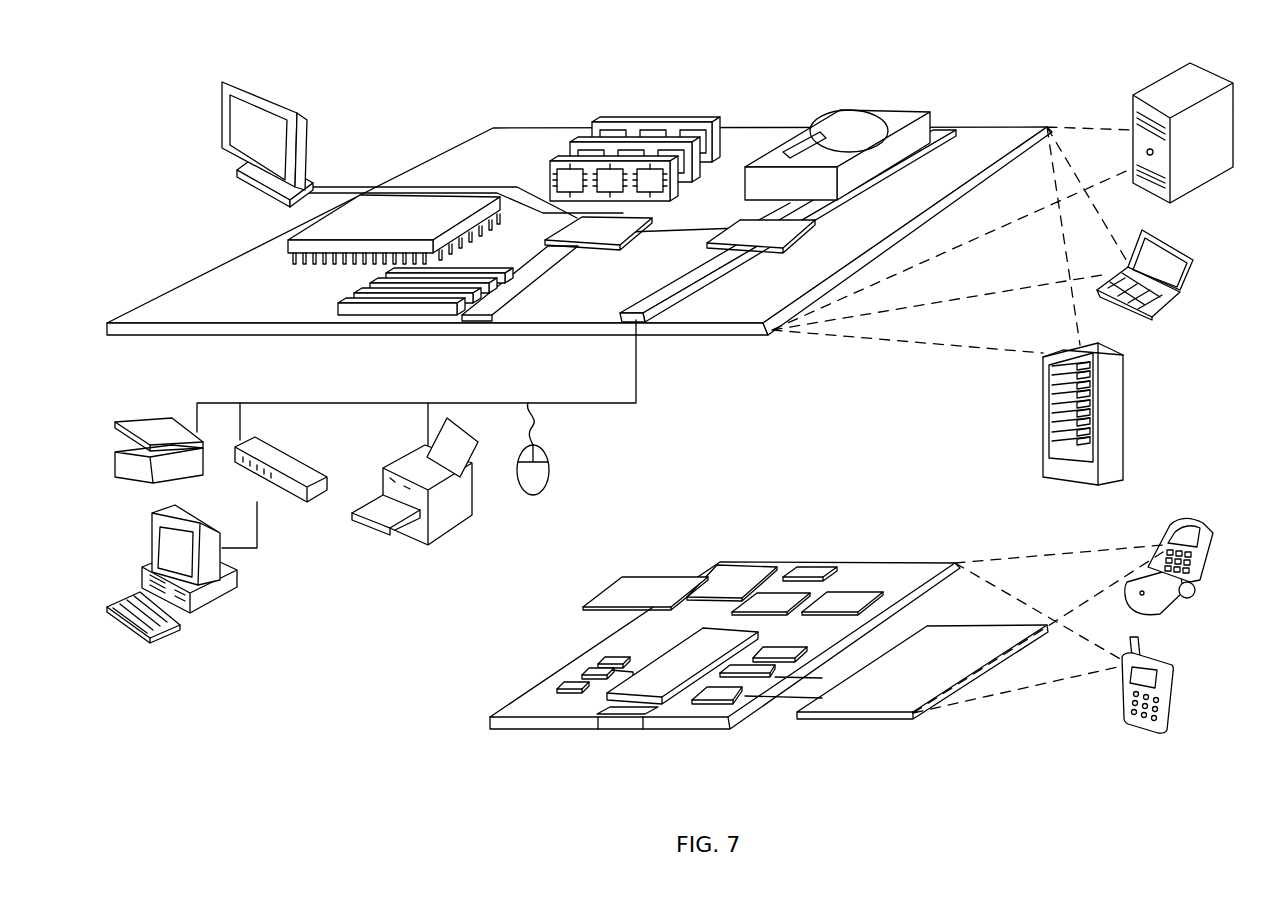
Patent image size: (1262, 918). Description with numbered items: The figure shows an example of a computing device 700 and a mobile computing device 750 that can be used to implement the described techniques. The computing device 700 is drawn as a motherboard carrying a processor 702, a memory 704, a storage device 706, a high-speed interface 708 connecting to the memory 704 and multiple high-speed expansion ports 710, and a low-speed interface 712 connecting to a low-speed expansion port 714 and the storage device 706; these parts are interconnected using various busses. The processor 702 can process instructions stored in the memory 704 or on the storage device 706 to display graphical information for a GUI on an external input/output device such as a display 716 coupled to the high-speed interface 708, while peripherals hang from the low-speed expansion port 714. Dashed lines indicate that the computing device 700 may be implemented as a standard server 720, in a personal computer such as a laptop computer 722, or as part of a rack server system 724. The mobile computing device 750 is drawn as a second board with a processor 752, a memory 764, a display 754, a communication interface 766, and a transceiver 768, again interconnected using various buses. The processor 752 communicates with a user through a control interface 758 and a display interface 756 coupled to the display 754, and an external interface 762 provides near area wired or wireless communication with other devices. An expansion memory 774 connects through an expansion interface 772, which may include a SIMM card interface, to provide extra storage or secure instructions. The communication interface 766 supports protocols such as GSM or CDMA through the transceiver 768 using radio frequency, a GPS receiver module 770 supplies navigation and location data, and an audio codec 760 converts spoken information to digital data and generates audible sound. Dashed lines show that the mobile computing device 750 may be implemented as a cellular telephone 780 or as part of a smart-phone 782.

The computing device 700 is at (413, 106).
The processor 702 is at (288, 242).
The memory 704 is at (606, 122).
The storage device 706 is at (822, 108).
The high-speed interface 708 is at (580, 226).
The high-speed expansion ports 710 is at (352, 298).
The low-speed interface 712 is at (740, 222).
The low-speed expansion port 714 is at (642, 326).
The display 716 is at (222, 84).
The standard server 720 is at (1133, 112).
The laptop computer 722 is at (1190, 248).
The rack server system 724 is at (1043, 438).
The mobile computing device 750 is at (466, 726).
The processor 752 is at (657, 688).
The display 754 is at (883, 700).
The display interface 756 is at (727, 698).
The control interface 758 is at (753, 670).
The audio codec 760 is at (780, 653).
The external interface 762 is at (622, 720).
The memory 764 is at (573, 685).
The communication interface 766 is at (772, 599).
The transceiver 768 is at (847, 598).
The GPS receiver module 770 is at (817, 567).
The expansion interface 772 is at (702, 573).
The expansion memory 774 is at (632, 578).
The cellular telephone 780 is at (1168, 547).
The smart-phone 782 is at (1122, 687).